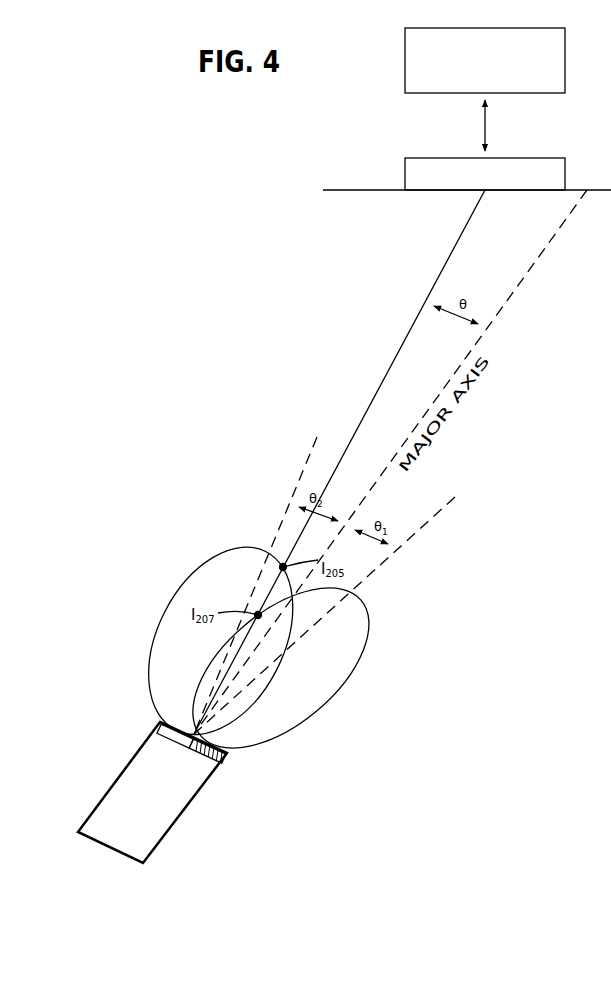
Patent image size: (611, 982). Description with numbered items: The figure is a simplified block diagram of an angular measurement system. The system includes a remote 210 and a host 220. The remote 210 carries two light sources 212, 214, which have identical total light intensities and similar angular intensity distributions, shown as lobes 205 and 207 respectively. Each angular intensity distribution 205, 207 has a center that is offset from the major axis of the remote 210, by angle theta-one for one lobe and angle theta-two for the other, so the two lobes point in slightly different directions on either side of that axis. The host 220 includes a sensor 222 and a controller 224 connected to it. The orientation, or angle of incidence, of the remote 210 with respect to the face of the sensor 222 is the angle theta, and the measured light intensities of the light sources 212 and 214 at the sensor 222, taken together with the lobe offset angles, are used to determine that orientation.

The angular intensity distribution 205 is at (162, 627).
The angular intensity distribution 207 is at (365, 641).
The remote 210 is at (182, 790).
The light source 212 is at (159, 722).
The light source 214 is at (228, 756).
The host 220 is at (417, 136).
The sensor 222 is at (552, 184).
The controller 224 is at (467, 80).